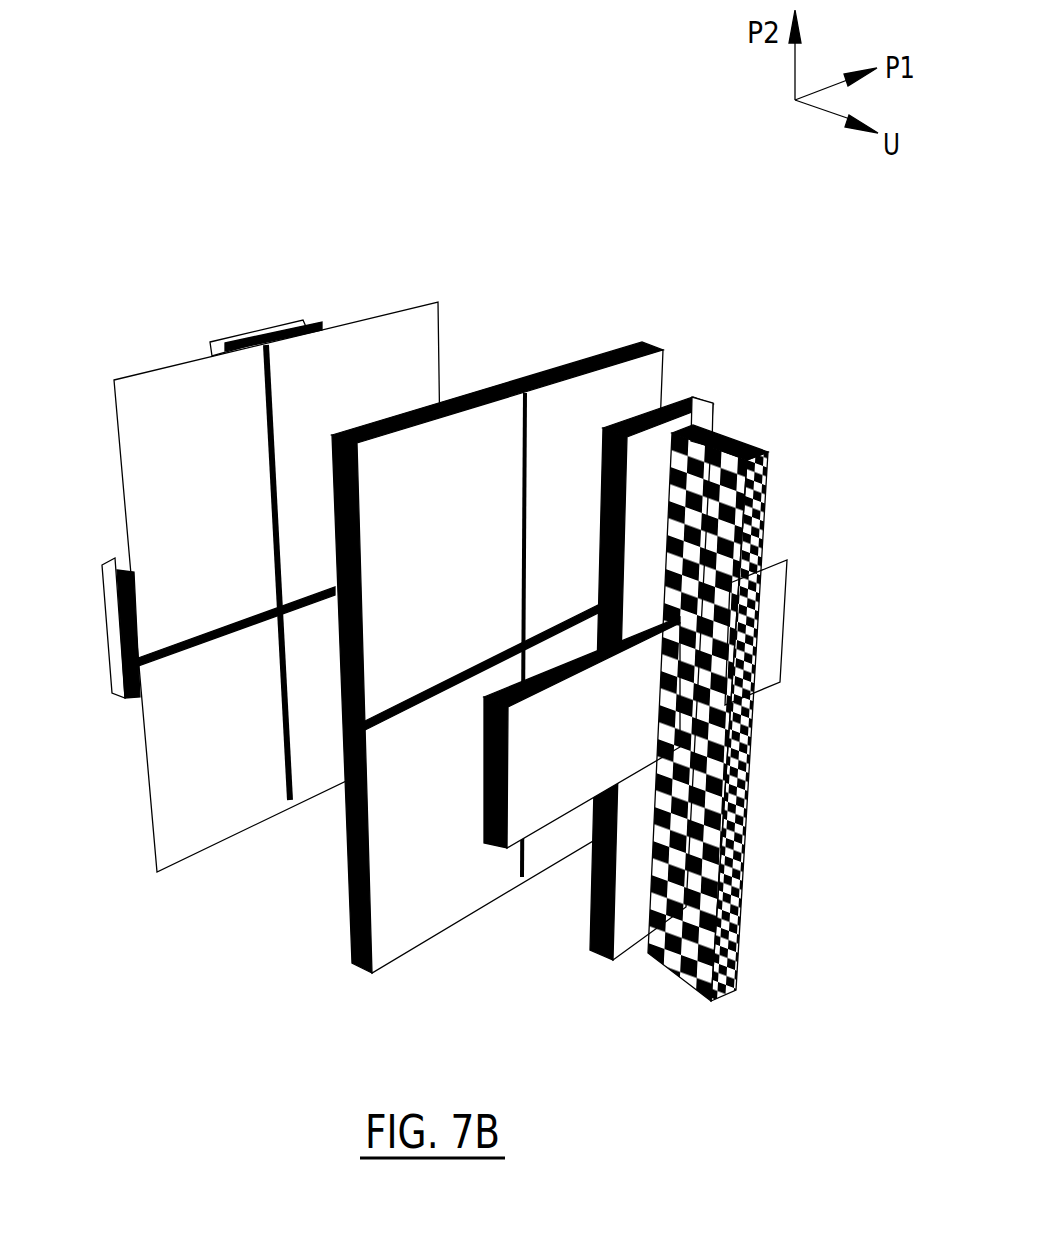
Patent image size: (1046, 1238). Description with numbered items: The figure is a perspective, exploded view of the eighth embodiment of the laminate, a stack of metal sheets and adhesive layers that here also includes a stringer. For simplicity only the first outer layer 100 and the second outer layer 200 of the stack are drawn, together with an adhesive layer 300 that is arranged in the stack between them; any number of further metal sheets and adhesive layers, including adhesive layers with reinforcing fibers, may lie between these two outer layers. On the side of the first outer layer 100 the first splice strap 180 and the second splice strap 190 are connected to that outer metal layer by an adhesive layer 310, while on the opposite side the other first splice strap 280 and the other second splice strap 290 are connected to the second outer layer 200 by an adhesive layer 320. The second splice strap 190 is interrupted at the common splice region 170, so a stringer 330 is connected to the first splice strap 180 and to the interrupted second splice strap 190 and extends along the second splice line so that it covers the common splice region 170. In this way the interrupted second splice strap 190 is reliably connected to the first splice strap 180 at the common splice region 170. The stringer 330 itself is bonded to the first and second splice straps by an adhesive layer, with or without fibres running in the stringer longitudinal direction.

The first outer layer 100 is at (628, 605).
The common splice region 170 is at (667, 705).
The first splice strap 180 is at (775, 588).
The second splice strap 190 is at (707, 418).
The second outer layer 200 is at (444, 258).
The other first splice strap 280 is at (112, 607).
The other second splice strap 290 is at (233, 347).
The adhesive layer 300 is at (548, 378).
The adhesive layer 310 is at (600, 918).
The adhesive layer 320 is at (135, 680).
The stringer 330 is at (733, 458).